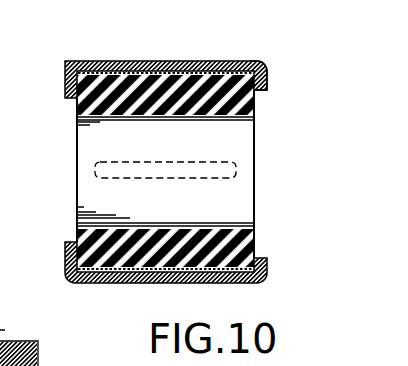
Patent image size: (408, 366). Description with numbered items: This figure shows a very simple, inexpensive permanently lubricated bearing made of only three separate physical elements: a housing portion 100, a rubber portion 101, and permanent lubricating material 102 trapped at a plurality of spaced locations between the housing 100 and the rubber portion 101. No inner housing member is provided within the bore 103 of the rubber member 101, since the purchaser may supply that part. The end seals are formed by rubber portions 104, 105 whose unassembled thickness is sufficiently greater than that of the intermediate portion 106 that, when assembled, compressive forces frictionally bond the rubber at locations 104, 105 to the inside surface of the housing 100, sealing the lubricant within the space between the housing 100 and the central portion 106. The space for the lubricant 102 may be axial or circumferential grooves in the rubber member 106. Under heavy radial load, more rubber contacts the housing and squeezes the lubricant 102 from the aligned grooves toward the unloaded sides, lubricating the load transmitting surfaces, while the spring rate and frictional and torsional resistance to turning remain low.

The housing portion 100 is at (173, 164).
The rubber portion 101 is at (253, 105).
The permanent lubricating material 102 is at (206, 62).
The bore 103 is at (233, 227).
The rubber end portion 104 is at (78, 62).
The rubber end portion 105 is at (258, 62).
The intermediate portion 106 is at (148, 81).